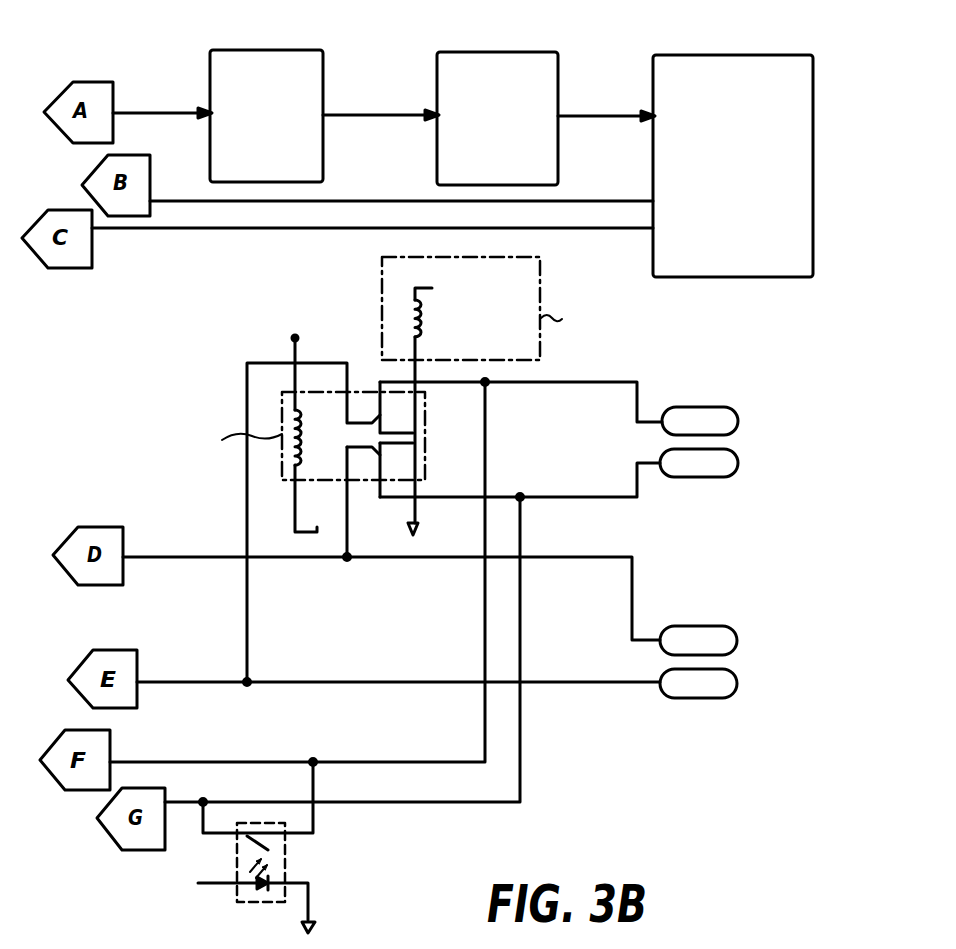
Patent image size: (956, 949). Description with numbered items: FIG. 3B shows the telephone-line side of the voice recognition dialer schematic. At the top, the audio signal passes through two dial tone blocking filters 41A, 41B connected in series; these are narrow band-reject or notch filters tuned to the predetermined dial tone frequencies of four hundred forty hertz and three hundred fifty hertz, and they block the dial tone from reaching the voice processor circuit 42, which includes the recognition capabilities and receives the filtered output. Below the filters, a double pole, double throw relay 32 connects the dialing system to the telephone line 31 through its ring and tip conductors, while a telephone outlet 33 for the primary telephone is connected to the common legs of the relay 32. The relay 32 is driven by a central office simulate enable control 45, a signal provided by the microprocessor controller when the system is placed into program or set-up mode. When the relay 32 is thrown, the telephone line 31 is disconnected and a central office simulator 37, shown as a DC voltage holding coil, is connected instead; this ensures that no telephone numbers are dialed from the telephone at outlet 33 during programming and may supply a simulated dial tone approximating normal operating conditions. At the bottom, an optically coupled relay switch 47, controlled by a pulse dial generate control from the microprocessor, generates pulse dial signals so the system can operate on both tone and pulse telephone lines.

The dial tone blocking filter 41A is at (245, 50).
The dial tone blocking filter 41B is at (472, 52).
The voice processor circuit 42 is at (698, 55).
The central office simulator 37 is at (541, 268).
The central office simulate enable control 45 is at (277, 474).
The double pole, double throw relay 32 is at (430, 435).
The telephone line 31 is at (734, 442).
The telephone outlet 33 is at (764, 691).
The optically coupled relay switch 47 is at (285, 858).